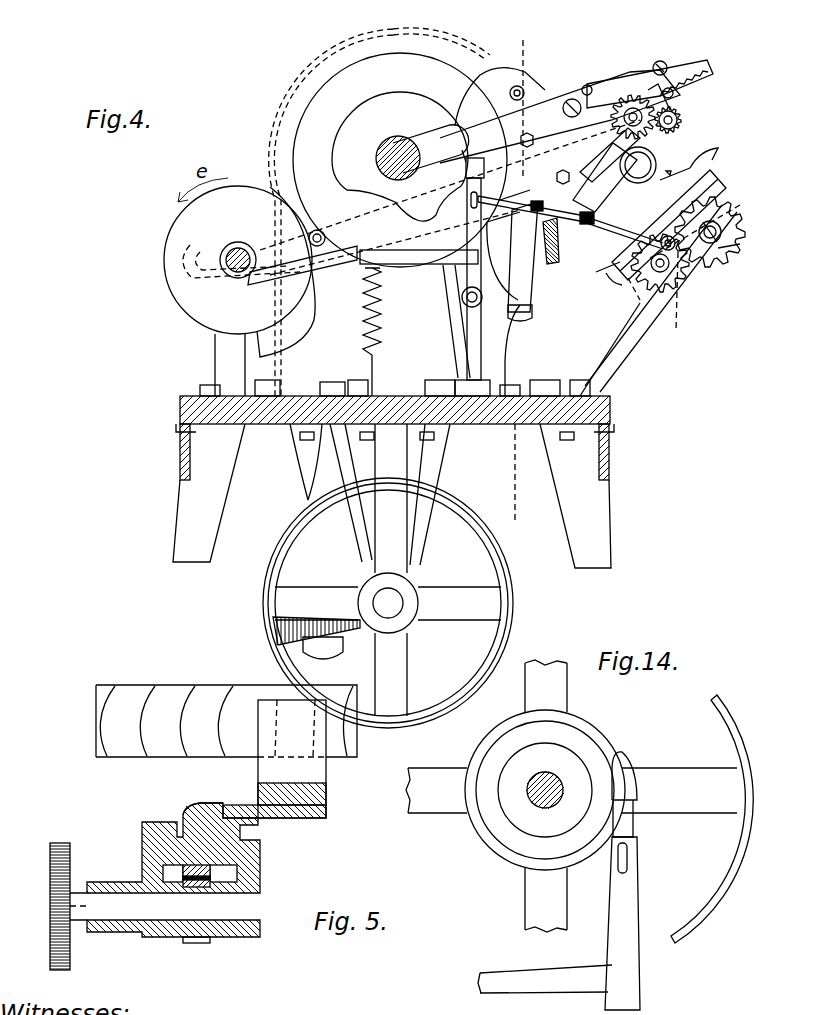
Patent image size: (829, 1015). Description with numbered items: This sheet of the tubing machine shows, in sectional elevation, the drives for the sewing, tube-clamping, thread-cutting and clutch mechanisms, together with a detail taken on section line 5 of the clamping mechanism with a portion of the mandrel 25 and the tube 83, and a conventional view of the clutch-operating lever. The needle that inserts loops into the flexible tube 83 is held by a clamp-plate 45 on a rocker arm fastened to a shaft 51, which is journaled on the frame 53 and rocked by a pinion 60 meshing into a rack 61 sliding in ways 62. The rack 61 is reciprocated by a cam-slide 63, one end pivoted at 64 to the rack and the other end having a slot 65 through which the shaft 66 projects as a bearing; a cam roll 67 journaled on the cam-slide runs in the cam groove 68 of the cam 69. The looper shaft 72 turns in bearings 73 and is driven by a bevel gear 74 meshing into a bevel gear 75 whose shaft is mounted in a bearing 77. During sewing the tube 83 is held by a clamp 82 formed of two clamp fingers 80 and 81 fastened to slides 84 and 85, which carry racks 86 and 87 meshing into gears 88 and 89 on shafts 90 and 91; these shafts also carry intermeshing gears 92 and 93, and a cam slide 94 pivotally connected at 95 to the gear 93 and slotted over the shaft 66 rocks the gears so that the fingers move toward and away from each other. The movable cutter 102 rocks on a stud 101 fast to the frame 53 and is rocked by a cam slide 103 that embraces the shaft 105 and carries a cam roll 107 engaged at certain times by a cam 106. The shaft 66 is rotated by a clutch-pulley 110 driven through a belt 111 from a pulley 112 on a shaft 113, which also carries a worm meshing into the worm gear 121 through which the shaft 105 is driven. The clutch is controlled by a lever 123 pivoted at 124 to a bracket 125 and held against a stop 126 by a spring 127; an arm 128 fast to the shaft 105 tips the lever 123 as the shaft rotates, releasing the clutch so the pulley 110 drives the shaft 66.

In FIG. 4, the section line 5 is at (734, 282).
In FIG. 5, the feed rod 25 is at (142, 692).
In FIG. 5, the clamp-plate 45 is at (256, 798).
In FIG. 4, the shaft 51 is at (634, 108).
In FIG. 4, the frame 53 is at (540, 90).
In FIG. 4, the pinion 60 is at (664, 62).
In FIG. 4, the rack 61 is at (714, 72).
In FIG. 4, the ways 62 is at (612, 70).
In FIG. 4, the cam-slide 63 is at (512, 86).
In FIG. 4, the pivot 64 is at (573, 99).
In FIG. 4, the slot 65 is at (441, 142).
In FIG. 4, the shaft 66 is at (380, 150).
In FIG. 4, the cam roll 67 is at (458, 168).
In FIG. 4, the cam groove 68 is at (405, 92).
In FIG. 4, the cam 69 is at (293, 150).
In FIG. 4, the shaft 72 is at (522, 320).
In FIG. 4, the bearing 73 is at (587, 177).
In FIG. 4, the bevel gear 74 is at (556, 258).
In FIG. 4, the bevel gear 75 is at (520, 252).
In FIG. 4, the bearing 77 is at (510, 210).
In FIG. 4, the clamp finger 80 is at (700, 168).
In FIG. 5, the clamp finger 80 is at (328, 776).
In FIG. 4, the clamp finger 81 is at (628, 170).
In FIG. 4, the clamp 82 is at (690, 150).
In FIG. 4, the tube 83 is at (620, 150).
In FIG. 5, the tube 83 is at (224, 684).
In FIG. 4, the slide 84 is at (708, 184).
In FIG. 5, the slide 84 is at (312, 818).
In FIG. 4, the slide 85 is at (624, 254).
In FIG. 4, the rack 86 is at (740, 205).
In FIG. 5, the rack 86 is at (180, 878).
In FIG. 4, the rack 87 is at (632, 278).
In FIG. 4, the gear 88 is at (735, 226).
In FIG. 5, the gear 88 is at (200, 943).
In FIG. 4, the gear 89 is at (672, 300).
In FIG. 4, the shaft 90 is at (738, 246).
In FIG. 5, the shaft 90 is at (262, 890).
In FIG. 4, the shaft 91 is at (656, 274).
In FIG. 4, the gear 92 is at (722, 236).
In FIG. 5, the gear 92 is at (50, 912).
In FIG. 4, the gear 93 is at (672, 286).
In FIG. 4, the cam slide 94 is at (612, 228).
In FIG. 4, the pivot connection 95 is at (704, 268).
In FIG. 4, the stud 101 is at (672, 100).
In FIG. 4, the movable cutter 102 is at (680, 120).
In FIG. 4, the cam slide 103 is at (372, 228).
In FIG. 4, the shaft 105 is at (236, 244).
In FIG. 4, the cam 106 is at (292, 332).
In FIG. 4, the cam roll 107 is at (317, 230).
In FIG. 4, the clutch-pulley 110 is at (335, 54).
In FIG. 4, the belt 111 is at (266, 572).
In FIG. 4, the pulley 112 is at (514, 570).
In FIG. 4, the shaft 113 is at (396, 601).
In FIG. 4, the worm gear 121 is at (326, 660).
In FIG. 4, the lever 123 is at (460, 280).
In FIG. 14, the lever 123 is at (632, 888).
In FIG. 4, the pivot 124 is at (476, 306).
In FIG. 4, the bracket 125 is at (458, 352).
In FIG. 4, the stop 126 is at (452, 300).
In FIG. 4, the spring 127 is at (364, 344).
In FIG. 4, the arm 128 is at (305, 266).